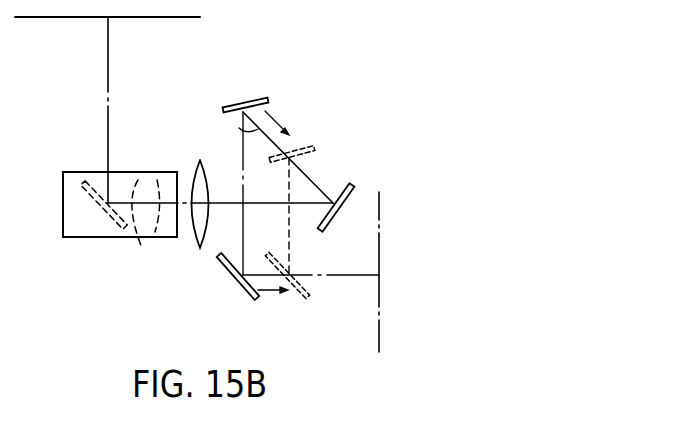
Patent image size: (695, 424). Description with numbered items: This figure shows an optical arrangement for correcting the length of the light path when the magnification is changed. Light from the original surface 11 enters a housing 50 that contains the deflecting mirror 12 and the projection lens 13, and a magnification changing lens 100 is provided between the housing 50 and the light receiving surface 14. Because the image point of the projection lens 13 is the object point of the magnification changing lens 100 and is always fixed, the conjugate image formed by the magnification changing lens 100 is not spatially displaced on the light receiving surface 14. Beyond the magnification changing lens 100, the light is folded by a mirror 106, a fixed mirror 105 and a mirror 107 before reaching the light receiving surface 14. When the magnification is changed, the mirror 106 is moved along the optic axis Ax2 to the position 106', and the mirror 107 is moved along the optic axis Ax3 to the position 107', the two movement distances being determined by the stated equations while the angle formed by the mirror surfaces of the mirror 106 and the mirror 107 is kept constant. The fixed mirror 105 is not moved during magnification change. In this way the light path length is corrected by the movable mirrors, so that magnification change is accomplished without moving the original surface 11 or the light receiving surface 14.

The original surface 11 is at (199, 16).
The housing 50 is at (63, 231).
The deflecting mirror 12 is at (118, 229).
The projection lens 13 is at (142, 232).
The magnification changing lens 100 is at (195, 176).
The mirror 106 is at (262, 89).
The moved mirror position 106' is at (320, 142).
The fixed mirror 105 is at (352, 188).
The light receiving surface 14 is at (381, 217).
The mirror 107 is at (231, 285).
The moved mirror position 107' is at (311, 292).
The optic axis Ax2 is at (229, 131).
The optic axis Ax3 is at (337, 272).